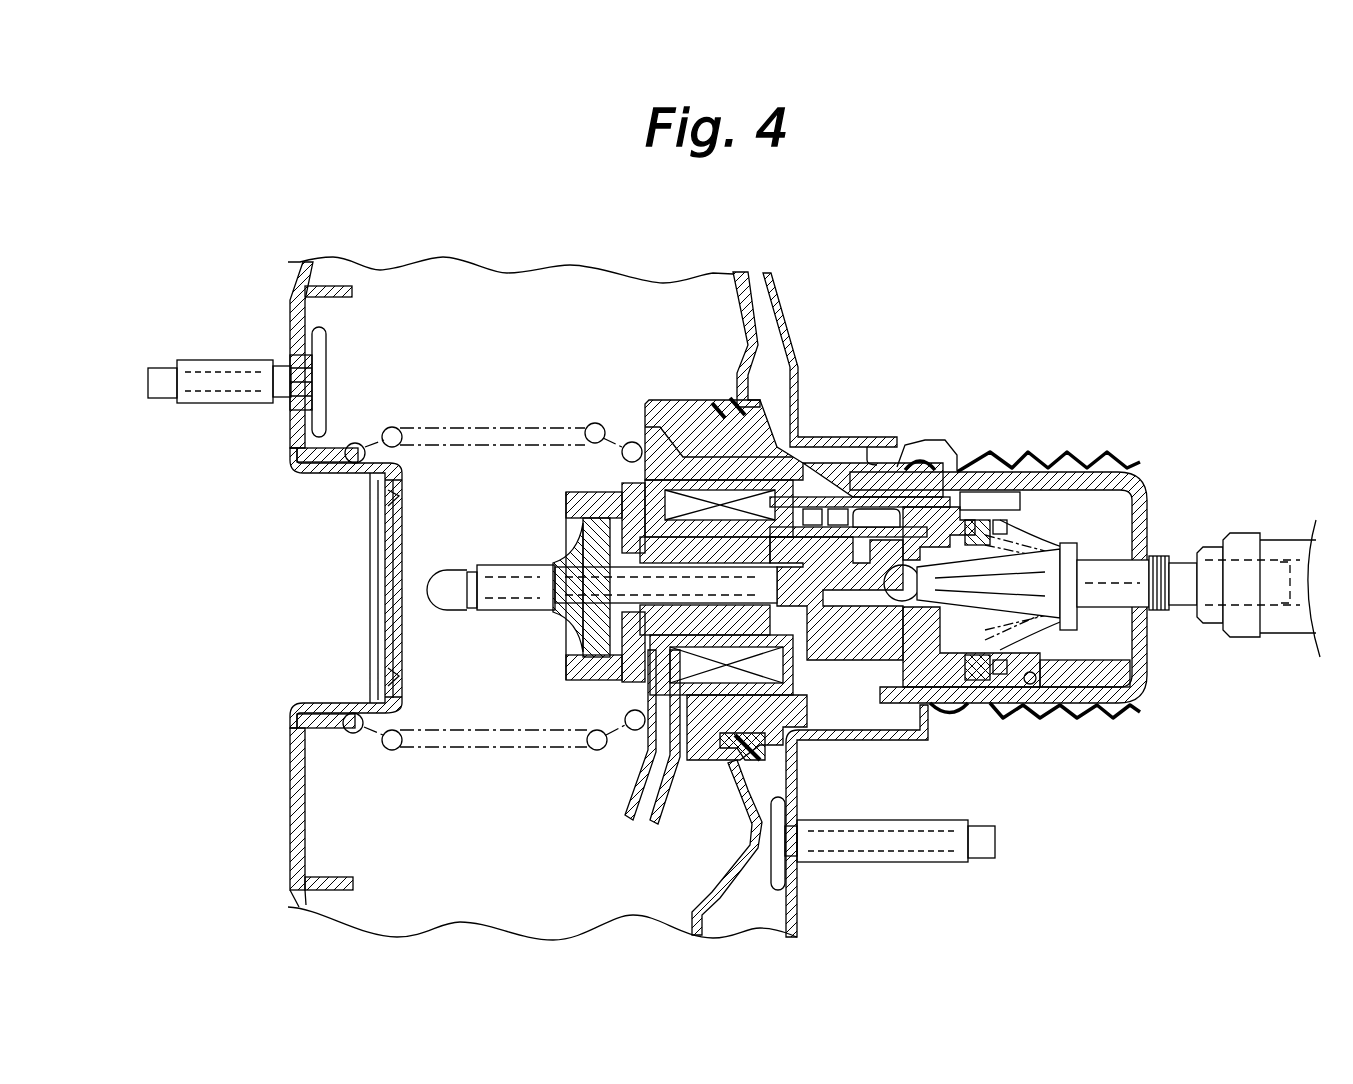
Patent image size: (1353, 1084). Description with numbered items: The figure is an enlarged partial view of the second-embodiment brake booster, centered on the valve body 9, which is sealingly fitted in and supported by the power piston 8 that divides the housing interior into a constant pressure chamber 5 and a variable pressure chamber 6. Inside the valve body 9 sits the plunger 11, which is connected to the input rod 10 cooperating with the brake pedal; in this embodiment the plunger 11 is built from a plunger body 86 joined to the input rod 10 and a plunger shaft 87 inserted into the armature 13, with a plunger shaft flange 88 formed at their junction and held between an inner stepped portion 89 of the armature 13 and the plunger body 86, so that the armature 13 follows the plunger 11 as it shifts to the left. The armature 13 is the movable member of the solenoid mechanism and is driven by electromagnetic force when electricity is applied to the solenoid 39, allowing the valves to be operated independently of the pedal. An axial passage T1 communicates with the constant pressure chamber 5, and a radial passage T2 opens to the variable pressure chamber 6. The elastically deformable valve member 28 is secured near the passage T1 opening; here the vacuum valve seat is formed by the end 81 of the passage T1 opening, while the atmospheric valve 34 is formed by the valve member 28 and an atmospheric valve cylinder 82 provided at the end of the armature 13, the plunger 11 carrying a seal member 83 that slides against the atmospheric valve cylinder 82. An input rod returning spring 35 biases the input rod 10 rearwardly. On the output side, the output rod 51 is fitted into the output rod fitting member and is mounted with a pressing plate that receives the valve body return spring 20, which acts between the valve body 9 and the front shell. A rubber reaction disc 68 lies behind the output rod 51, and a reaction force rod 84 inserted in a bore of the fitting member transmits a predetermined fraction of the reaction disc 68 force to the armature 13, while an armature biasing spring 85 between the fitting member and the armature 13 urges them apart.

The constant pressure chamber 5 is at (684, 310).
The variable pressure chamber 6 is at (767, 343).
The power piston 8 is at (745, 300).
The valve body 9 is at (668, 400).
The input rod 10 is at (1283, 545).
The plunger 11 is at (918, 217).
The armature 13 is at (695, 720).
The valve body return spring 20 is at (418, 425).
The valve member 28 is at (1052, 700).
The atmospheric valve 34 is at (945, 650).
The input rod returning spring 35 is at (1075, 465).
The solenoid 39 is at (720, 760).
The output rod 51 is at (455, 588).
The reaction disc 68 is at (590, 540).
The end of the passage T1 opening 81 is at (957, 455).
The atmospheric valve cylinder 82 is at (955, 655).
The seal member 83 is at (945, 660).
The reaction force rod 84 is at (590, 497).
The armature biasing spring 85 is at (600, 627).
The plunger body 86 is at (858, 527).
The plunger shaft 87 is at (812, 510).
The plunger shaft flange 88 is at (838, 510).
The inner stepped portion 89 is at (785, 540).
The passage T1 is at (875, 495).
The passage T2 is at (887, 690).